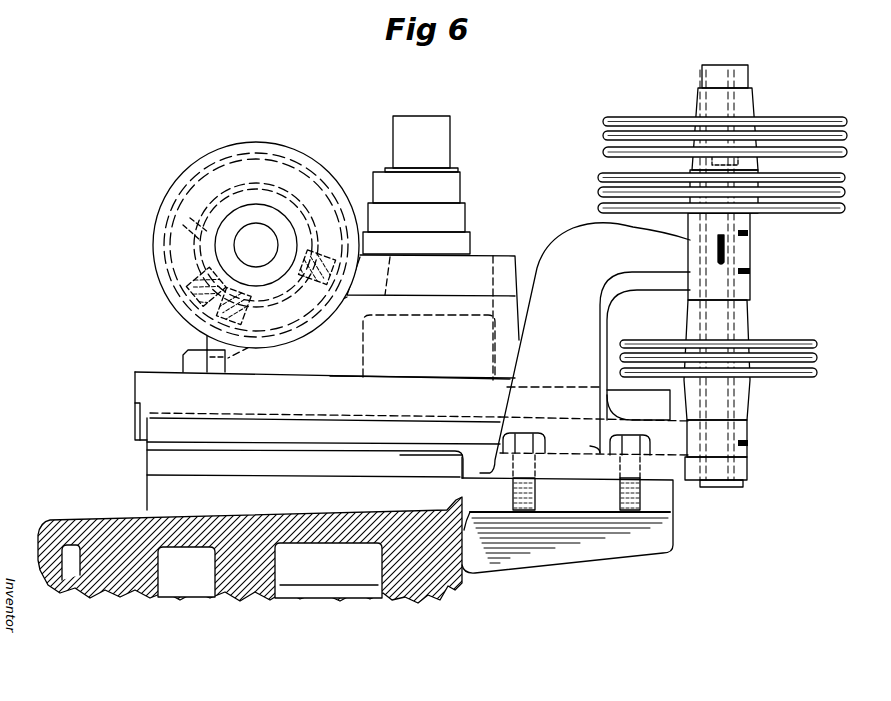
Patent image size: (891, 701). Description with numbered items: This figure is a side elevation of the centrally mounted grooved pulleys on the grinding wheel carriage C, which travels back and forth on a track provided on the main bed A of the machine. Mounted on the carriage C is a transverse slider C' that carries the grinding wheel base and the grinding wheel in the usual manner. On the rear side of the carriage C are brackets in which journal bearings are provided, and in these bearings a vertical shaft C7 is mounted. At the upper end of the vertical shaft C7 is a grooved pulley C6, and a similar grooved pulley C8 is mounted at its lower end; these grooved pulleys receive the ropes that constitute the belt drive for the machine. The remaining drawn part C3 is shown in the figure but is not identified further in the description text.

The main bed A is at (215, 578).
The grinding wheel carriage C is at (237, 245).
The transverse slider C' is at (412, 366).
The upper guide rods C3 is at (647, 120).
The grooved pulley C6 is at (822, 191).
The vertical shaft C7 is at (757, 123).
The grooved pulley C8 is at (652, 340).